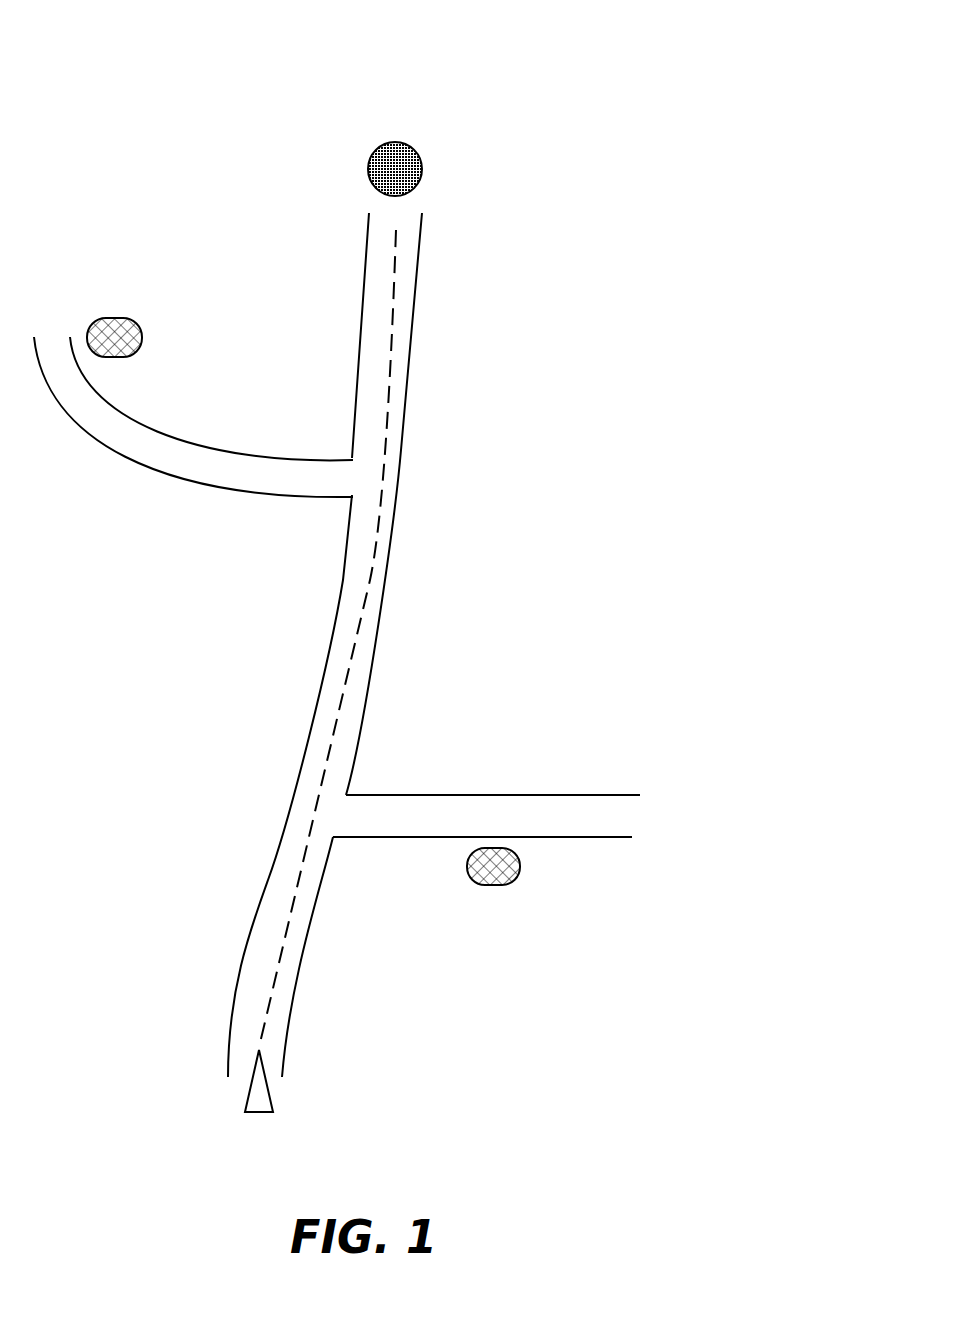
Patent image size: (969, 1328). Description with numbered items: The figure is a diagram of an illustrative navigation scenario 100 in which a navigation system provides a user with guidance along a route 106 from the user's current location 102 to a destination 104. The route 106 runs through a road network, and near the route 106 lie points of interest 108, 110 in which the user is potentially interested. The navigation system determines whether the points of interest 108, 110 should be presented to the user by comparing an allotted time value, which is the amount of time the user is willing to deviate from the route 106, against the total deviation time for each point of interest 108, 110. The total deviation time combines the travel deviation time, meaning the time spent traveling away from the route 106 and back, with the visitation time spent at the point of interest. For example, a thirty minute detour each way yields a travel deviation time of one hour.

The environment / road network 100 is at (85, 109).
The current location 102 is at (272, 1095).
The destination 104 is at (418, 173).
The route 106 is at (363, 603).
The point of interest 108 is at (520, 866).
The point of interest 110 is at (110, 320).